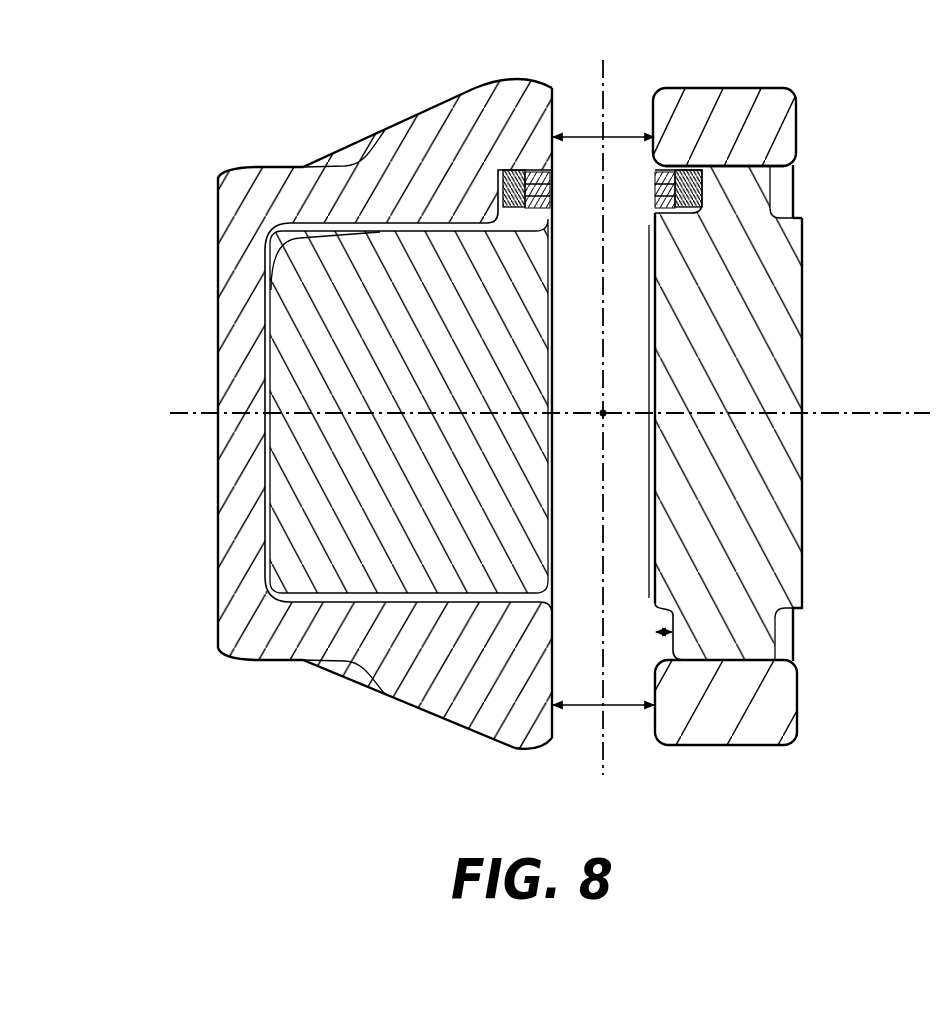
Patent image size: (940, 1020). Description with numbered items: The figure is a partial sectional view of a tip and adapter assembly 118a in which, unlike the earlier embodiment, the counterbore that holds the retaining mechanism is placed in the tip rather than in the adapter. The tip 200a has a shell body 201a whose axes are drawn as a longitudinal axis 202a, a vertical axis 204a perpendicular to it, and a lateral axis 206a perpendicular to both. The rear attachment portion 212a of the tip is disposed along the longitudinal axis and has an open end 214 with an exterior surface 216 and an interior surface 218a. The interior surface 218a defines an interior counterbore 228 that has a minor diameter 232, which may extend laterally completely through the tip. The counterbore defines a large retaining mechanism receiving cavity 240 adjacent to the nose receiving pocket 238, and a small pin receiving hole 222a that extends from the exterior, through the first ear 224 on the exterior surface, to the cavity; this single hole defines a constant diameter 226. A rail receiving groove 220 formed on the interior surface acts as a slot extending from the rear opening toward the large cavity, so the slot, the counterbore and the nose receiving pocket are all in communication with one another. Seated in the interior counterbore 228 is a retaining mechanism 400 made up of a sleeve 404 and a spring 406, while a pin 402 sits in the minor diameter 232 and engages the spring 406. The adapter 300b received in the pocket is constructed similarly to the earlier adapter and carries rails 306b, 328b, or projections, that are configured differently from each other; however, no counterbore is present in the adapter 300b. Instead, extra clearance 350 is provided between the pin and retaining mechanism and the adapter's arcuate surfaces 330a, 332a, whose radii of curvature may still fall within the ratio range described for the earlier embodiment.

The tip and adapter assembly 118a is at (838, 152).
The tip 200a is at (258, 662).
The shell body 201a is at (276, 180).
The longitudinal axis 202a is at (200, 415).
The vertical axis 204a is at (600, 416).
The lateral axis 206a is at (604, 513).
The rear attachment portion 212a is at (800, 736).
The open end 214 is at (803, 190).
The exterior surface 216 is at (764, 86).
The interior surface 218a is at (796, 196).
The rail receiving groove 220 is at (806, 170).
The small pin receiving hole 222a is at (556, 85).
The first ear 224 is at (489, 86).
The constant diameter 226 is at (625, 135).
The interior counterbore 228 is at (508, 216).
The minor diameter 232 is at (594, 710).
The nose receiving pocket 238 is at (353, 604).
The large retaining mechanism receiving cavity 240 is at (694, 161).
The adapter 300b is at (791, 464).
The rail 306b is at (748, 166).
The rail 328b is at (760, 648).
The arcuate surface 330a is at (703, 211).
The arcuate surface 332a is at (672, 622).
The extra clearance 350 is at (663, 628).
The retaining mechanism 400 is at (678, 211).
The pin 402 is at (630, 724).
The sleeve 404 is at (500, 172).
The spring 406 is at (694, 166).